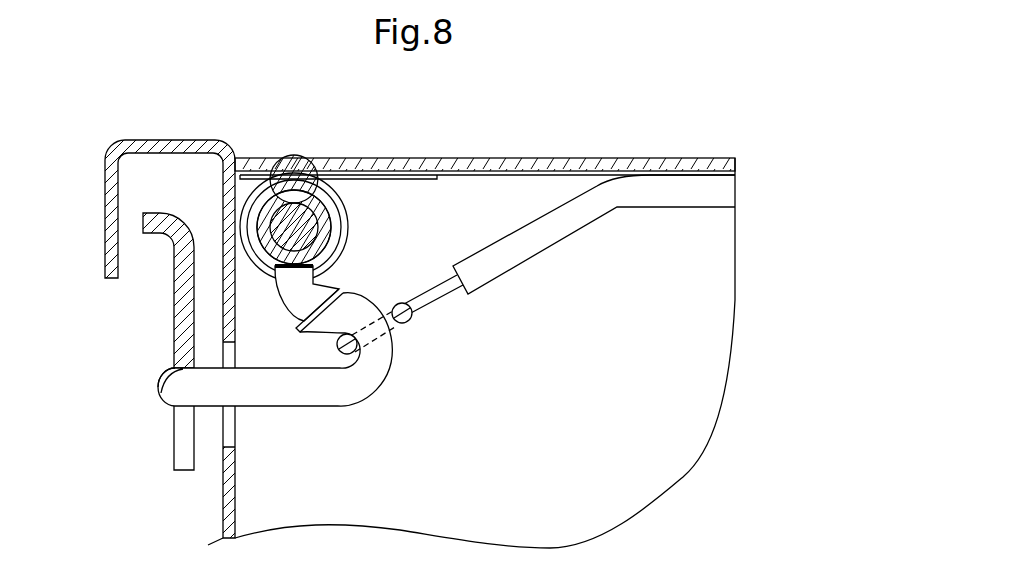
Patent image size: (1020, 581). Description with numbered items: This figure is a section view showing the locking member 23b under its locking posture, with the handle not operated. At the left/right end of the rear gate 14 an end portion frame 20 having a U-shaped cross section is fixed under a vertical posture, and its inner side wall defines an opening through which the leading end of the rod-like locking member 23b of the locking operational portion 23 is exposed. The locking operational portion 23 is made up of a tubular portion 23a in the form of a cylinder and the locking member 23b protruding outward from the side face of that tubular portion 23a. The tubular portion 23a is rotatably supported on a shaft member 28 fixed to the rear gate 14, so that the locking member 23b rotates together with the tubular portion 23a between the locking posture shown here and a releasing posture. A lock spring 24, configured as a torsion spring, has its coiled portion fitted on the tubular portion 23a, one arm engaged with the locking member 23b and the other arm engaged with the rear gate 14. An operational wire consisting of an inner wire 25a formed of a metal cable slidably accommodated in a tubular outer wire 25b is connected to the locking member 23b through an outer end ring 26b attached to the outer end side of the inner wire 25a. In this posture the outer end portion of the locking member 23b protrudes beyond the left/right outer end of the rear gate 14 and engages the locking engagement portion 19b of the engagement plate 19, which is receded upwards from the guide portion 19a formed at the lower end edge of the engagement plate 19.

The rear gate 14 is at (523, 193).
The engagement plate 19 is at (173, 318).
The guide portion 19a is at (180, 437).
The locking engagement portion 19b is at (160, 393).
The end portion frame 20 is at (233, 495).
The locking operational portion 23 is at (340, 408).
The tubular portion 23a is at (280, 200).
The locking member 23b is at (291, 388).
The lock spring 24 is at (348, 227).
The inner wire 25a is at (440, 300).
The outer wire 25b is at (685, 195).
The outer end ring 26b is at (405, 320).
The shaft member 28 is at (296, 226).